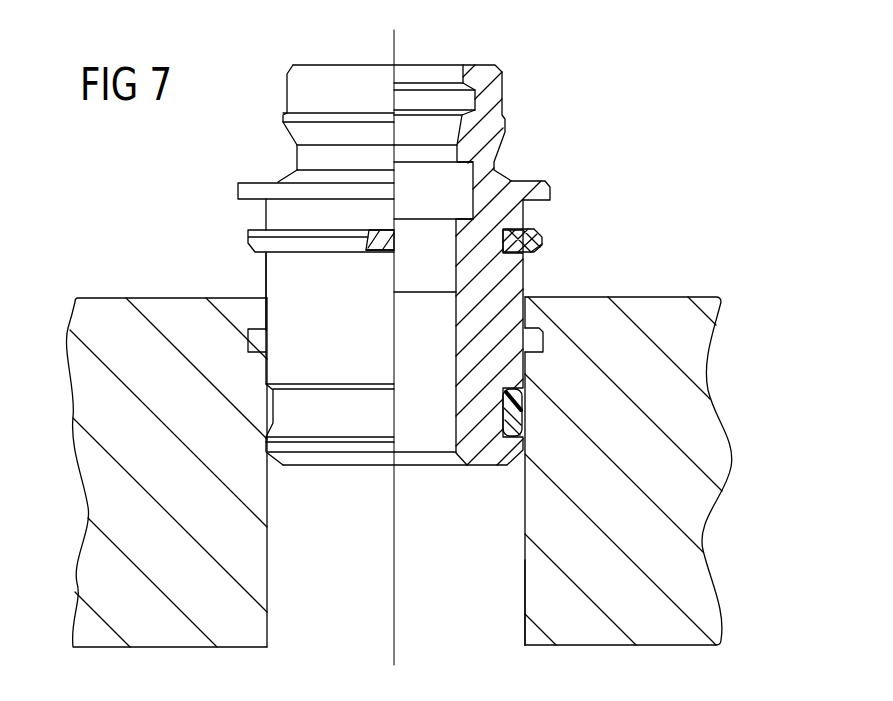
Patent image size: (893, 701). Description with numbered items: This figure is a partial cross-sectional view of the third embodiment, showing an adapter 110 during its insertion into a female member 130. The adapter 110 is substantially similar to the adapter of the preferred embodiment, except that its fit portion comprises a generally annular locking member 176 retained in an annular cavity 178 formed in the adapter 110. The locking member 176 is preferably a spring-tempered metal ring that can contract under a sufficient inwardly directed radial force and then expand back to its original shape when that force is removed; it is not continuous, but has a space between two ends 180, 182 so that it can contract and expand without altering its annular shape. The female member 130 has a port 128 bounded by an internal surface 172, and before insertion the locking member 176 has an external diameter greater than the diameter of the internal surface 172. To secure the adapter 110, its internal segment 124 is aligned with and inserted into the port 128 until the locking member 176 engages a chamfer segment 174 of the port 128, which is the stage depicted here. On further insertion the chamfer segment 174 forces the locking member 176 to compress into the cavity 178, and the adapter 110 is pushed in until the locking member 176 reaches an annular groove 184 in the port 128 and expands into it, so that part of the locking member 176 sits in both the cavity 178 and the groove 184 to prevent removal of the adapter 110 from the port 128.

The adapter 110 is at (285, 85).
The end of locking member 180 is at (370, 245).
The locking member 176 is at (248, 235).
The end of locking member 182 is at (370, 245).
The internal segment 124 is at (283, 320).
The chamfer segment 174 is at (263, 299).
The annular cavity 178 is at (531, 229).
The annular groove 184 is at (535, 327).
The female member 130 is at (743, 302).
The port 128 is at (353, 586).
The internal surface 172 is at (526, 614).